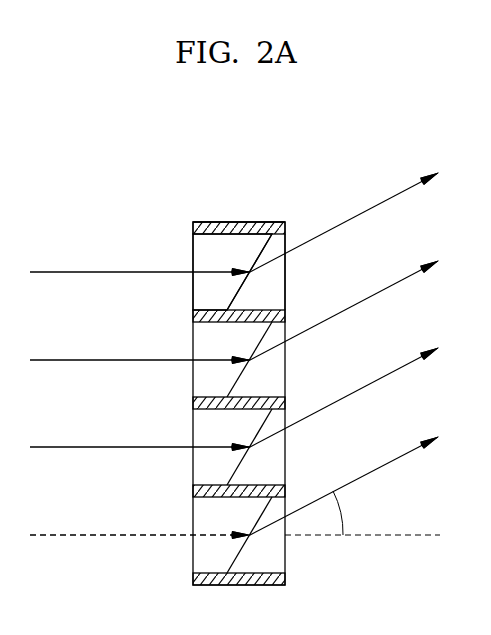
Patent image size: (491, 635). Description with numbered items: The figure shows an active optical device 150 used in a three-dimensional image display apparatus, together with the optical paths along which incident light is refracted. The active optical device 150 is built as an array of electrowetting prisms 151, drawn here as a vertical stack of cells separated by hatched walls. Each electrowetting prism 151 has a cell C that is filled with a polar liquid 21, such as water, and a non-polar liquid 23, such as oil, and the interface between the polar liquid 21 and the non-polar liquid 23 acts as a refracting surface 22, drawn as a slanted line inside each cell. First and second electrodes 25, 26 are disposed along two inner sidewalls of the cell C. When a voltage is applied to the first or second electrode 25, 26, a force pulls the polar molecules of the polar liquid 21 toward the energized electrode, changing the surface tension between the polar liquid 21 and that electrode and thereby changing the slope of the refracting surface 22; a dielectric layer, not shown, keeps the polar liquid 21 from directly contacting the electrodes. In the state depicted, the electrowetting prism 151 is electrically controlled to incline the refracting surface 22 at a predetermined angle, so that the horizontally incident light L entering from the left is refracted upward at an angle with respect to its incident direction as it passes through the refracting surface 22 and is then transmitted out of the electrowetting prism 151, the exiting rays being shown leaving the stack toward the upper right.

The active optical device 150 is at (333, 170).
The electrowetting prism 151 is at (223, 209).
The polar liquid 21 is at (200, 290).
The refracting surface 22 is at (286, 254).
The non-polar liquid 23 is at (270, 289).
The first electrode 25 is at (287, 225).
The second electrode 26 is at (287, 316).
The cell C is at (192, 245).
The light L is at (133, 403).